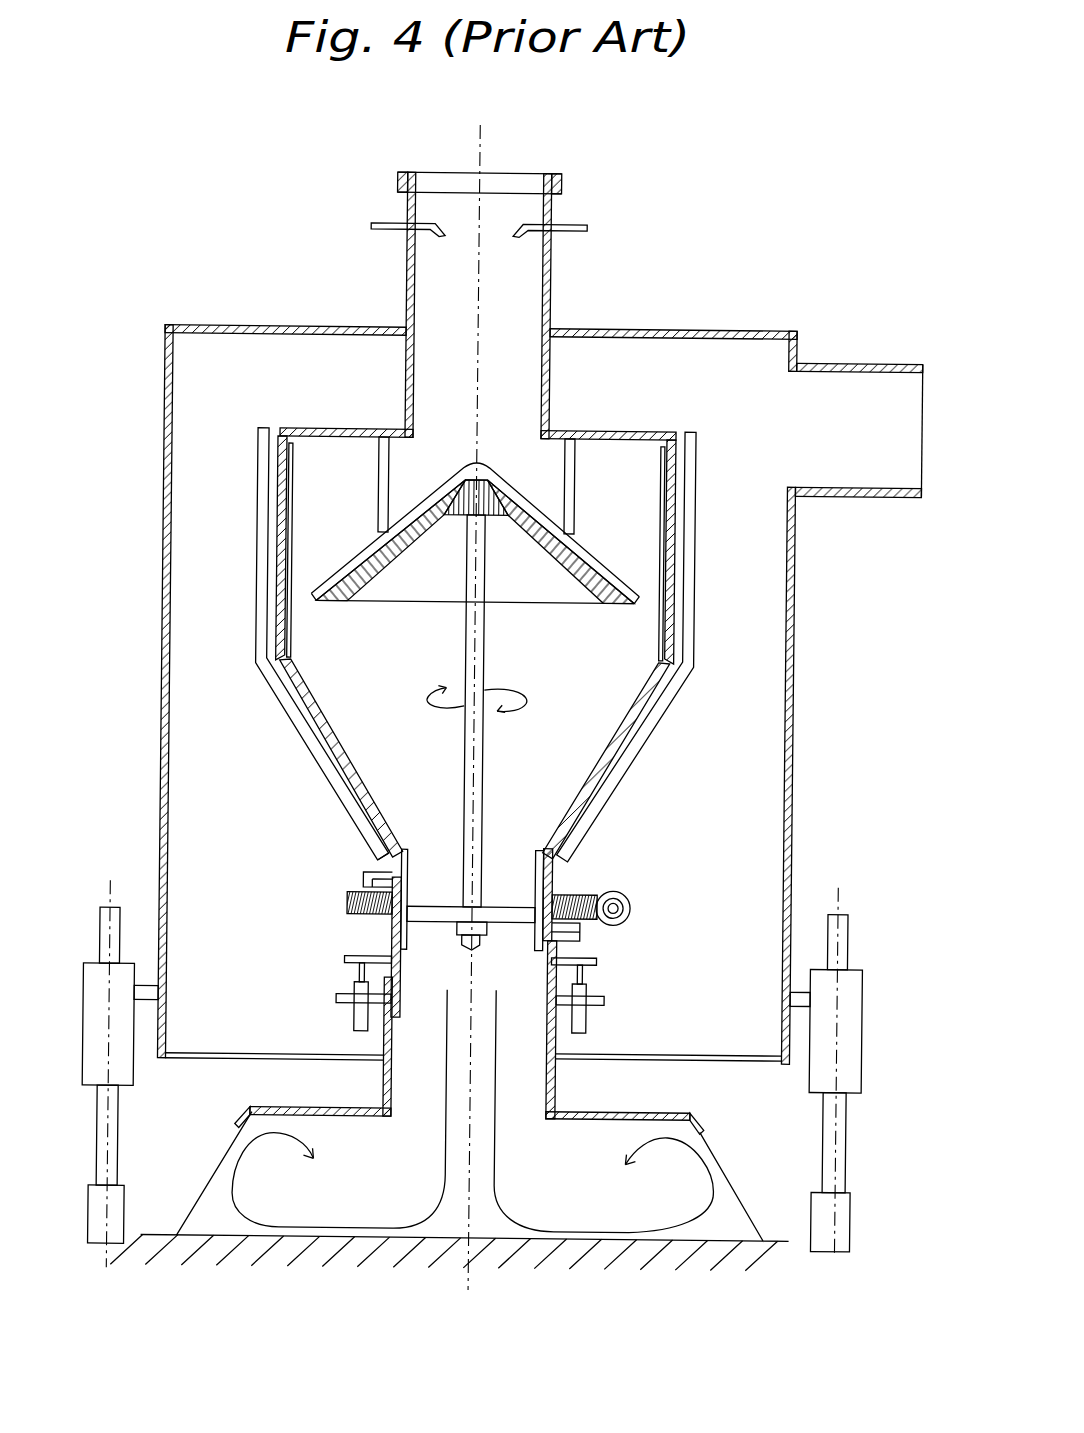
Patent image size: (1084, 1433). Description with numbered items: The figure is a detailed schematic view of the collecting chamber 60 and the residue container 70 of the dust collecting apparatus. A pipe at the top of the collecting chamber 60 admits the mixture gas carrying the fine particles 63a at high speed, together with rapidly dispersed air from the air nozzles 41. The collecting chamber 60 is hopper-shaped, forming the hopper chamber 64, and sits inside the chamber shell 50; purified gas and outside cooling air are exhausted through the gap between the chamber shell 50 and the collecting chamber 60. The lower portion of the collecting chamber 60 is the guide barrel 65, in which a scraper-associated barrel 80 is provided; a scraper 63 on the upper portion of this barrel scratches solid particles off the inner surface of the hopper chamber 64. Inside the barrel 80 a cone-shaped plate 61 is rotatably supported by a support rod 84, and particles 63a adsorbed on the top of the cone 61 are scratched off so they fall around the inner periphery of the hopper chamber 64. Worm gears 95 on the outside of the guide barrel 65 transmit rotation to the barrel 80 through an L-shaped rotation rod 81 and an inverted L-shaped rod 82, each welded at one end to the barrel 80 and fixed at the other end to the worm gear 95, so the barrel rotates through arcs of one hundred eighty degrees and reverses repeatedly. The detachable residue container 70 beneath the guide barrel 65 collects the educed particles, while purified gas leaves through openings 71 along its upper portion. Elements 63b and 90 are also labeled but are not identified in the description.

The air nozzles 41 is at (577, 223).
The chamber shell 50 is at (258, 331).
The collecting chamber 60 is at (294, 768).
The cone-shaped plate 61 is at (467, 466).
The scraper 63 is at (296, 623).
The fine particles 63a is at (585, 540).
The cone support rods 63b is at (588, 432).
The hopper chamber 64 is at (700, 551).
The guide barrel 65 is at (385, 834).
The residue container 70 is at (731, 1170).
The openings 71 is at (345, 1109).
The scraper-associated barrel 80 is at (412, 868).
The L-shaped rotation rod 81 is at (585, 932).
The inverted L-shaped rod 82 is at (371, 880).
The support rod 84 is at (487, 669).
The adjusting knob 90 is at (628, 864).
The worm gear 95 is at (360, 906).